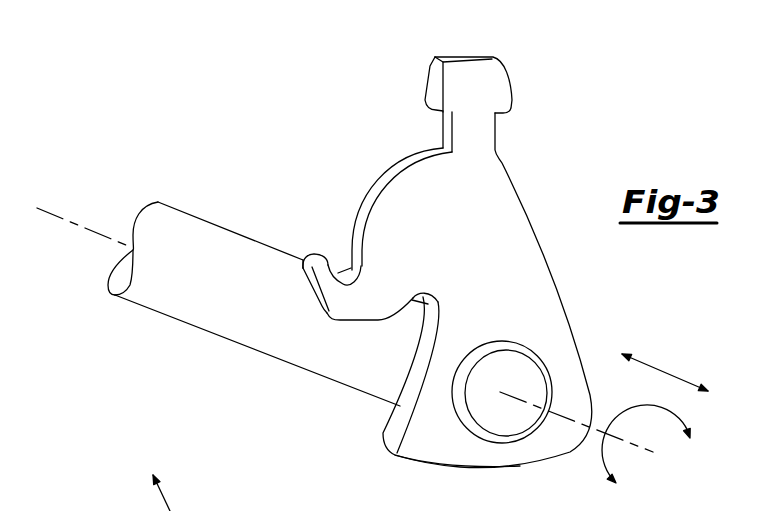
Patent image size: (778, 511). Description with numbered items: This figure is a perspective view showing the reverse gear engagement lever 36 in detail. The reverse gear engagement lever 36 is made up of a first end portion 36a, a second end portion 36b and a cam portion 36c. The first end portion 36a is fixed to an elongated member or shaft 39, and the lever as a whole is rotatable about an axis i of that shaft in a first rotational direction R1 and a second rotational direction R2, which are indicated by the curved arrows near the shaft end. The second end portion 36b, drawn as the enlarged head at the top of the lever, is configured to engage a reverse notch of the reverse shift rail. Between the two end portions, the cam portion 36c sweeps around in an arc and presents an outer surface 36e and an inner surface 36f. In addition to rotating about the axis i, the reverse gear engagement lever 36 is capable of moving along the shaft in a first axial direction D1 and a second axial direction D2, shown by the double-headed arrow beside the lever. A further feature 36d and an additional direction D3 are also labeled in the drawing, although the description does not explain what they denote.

The reverse gear engagement lever 36 is at (438, 261).
The first end portion 36a is at (470, 470).
The second end portion 36b is at (467, 57).
The cam portion 36c is at (340, 181).
The detent bump of latch member 36d is at (328, 256).
The outer surface 36e is at (305, 272).
The inner surface 36f is at (360, 270).
The elongated member or shaft 39 is at (277, 347).
The axis i is at (66, 221).
The first axial direction D1 is at (679, 379).
The second axial direction D2 is at (614, 355).
The direction D3 is at (152, 482).
The first rotational direction R1 is at (645, 456).
The second rotational direction R2 is at (698, 444).